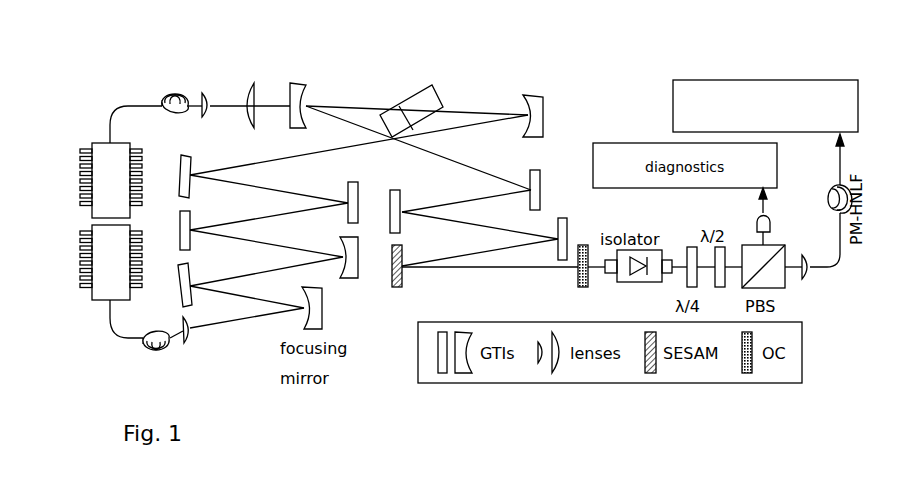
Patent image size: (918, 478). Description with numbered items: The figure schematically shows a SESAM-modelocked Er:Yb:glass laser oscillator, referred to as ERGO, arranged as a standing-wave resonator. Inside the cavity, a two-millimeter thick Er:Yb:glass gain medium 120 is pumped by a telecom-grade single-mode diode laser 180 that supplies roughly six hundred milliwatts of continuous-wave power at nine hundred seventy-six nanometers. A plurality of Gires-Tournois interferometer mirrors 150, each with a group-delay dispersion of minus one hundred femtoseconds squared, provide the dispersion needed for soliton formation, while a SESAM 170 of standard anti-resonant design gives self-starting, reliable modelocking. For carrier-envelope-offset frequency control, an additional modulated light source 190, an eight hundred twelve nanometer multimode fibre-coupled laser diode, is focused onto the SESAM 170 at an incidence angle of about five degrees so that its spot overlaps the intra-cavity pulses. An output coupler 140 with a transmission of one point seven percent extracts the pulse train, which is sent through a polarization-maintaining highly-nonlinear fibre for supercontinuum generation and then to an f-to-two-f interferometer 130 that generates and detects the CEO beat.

The Er:Yb:glass gain medium 120 is at (432, 87).
The f-to-2f interferometer 130 is at (712, 80).
The output coupler 140 is at (583, 288).
The Gires-Tournois interferometer mirrors 150 is at (186, 172).
The SESAM 170 is at (398, 288).
The single-mode diode laser 180 is at (98, 143).
The modulated light source 190 is at (98, 300).